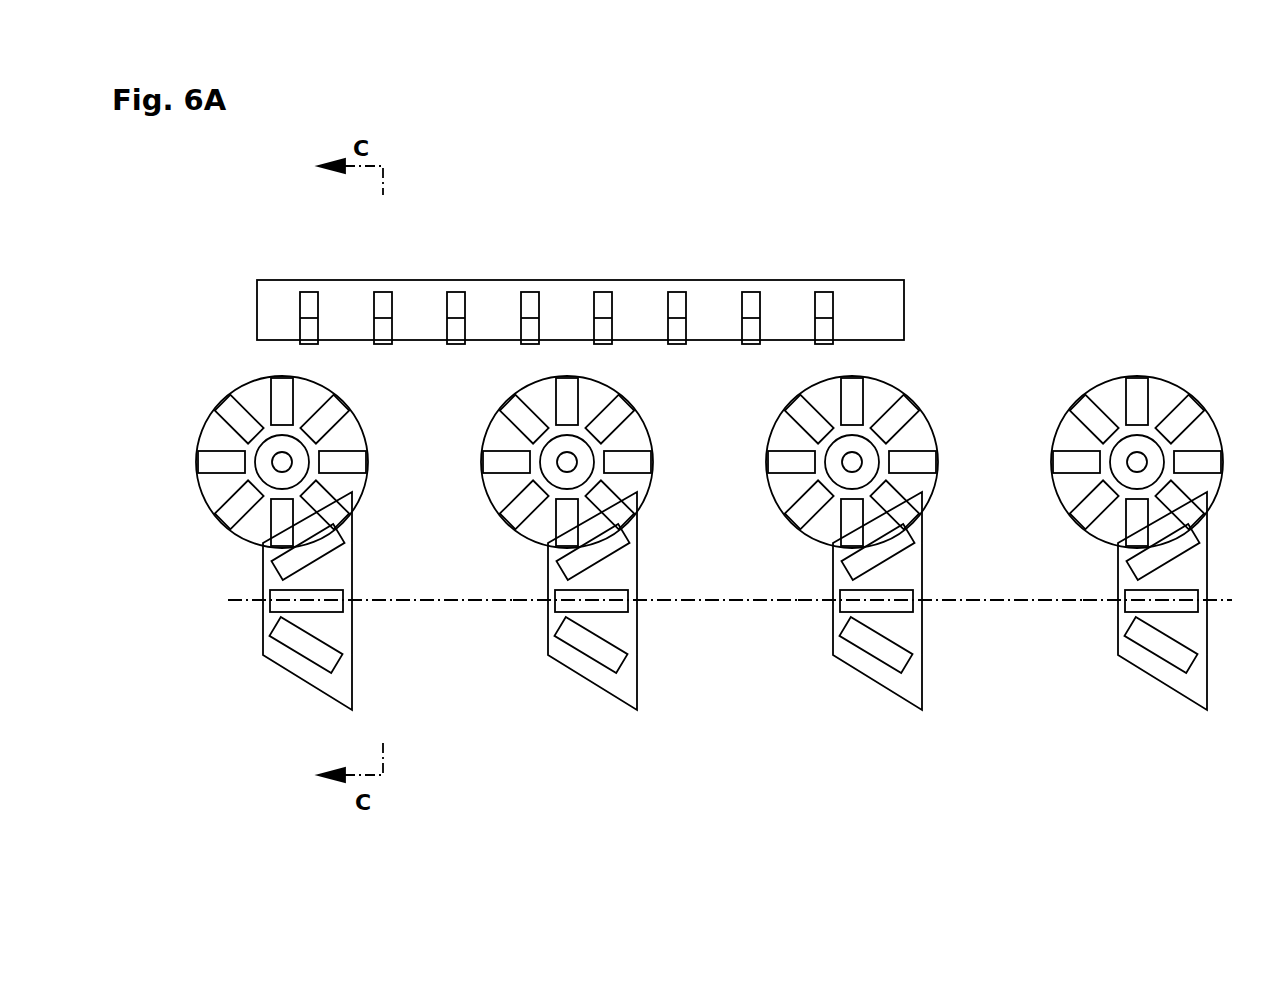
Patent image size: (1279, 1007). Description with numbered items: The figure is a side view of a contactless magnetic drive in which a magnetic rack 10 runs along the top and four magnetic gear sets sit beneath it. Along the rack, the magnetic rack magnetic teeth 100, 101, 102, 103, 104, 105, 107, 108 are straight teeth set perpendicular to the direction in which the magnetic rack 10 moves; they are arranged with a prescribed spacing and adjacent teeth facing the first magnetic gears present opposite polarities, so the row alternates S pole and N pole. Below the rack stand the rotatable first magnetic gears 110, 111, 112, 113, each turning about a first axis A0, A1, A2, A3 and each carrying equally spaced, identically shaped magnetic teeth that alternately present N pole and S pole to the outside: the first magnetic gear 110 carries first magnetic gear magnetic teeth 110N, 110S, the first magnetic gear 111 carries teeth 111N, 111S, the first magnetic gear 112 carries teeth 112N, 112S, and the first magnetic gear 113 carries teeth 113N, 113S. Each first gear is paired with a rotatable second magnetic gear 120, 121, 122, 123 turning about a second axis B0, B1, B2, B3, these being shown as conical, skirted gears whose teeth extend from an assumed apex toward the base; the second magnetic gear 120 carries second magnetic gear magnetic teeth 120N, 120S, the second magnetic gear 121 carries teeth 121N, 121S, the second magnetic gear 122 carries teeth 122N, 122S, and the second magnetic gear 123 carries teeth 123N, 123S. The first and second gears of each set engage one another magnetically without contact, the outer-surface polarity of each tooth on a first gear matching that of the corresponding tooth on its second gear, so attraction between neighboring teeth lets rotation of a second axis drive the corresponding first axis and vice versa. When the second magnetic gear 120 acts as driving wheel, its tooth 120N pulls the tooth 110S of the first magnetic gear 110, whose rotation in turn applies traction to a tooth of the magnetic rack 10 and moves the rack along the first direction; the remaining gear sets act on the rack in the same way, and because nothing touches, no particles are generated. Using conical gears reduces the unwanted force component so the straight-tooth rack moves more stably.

The magnetic rack 10 is at (888, 307).
The magnetic rack magnetic tooth 100 is at (309, 292).
The magnetic rack magnetic tooth 101 is at (383, 292).
The magnetic rack magnetic tooth 102 is at (456, 292).
The magnetic rack magnetic tooth 103 is at (530, 292).
The magnetic rack magnetic tooth 104 is at (603, 292).
The magnetic rack magnetic tooth 105 is at (677, 292).
The magnetic rack magnetic tooth 107 is at (751, 292).
The magnetic rack magnetic tooth 108 is at (824, 292).
The first magnetic gear 110 is at (241, 454).
The first magnetic gear magnetic tooth 110S is at (189, 402).
The first magnetic gear magnetic tooth 110N is at (179, 481).
The first magnetic gear 111 is at (526, 454).
The first magnetic gear magnetic tooth 111S is at (474, 402).
The first magnetic gear magnetic tooth 111N is at (464, 481).
The first magnetic gear 112 is at (811, 454).
The first magnetic gear magnetic tooth 112S is at (759, 402).
The first magnetic gear magnetic tooth 112N is at (749, 481).
The first magnetic gear 113 is at (1096, 454).
The first magnetic gear magnetic tooth 113S is at (1044, 402).
The first magnetic gear magnetic tooth 113N is at (1034, 481).
The second magnetic gear 120 is at (254, 601).
The second magnetic gear magnetic tooth 120N is at (250, 552).
The second magnetic gear magnetic tooth 120S is at (250, 630).
The second magnetic gear 121 is at (539, 601).
The second magnetic gear magnetic tooth 121N is at (535, 552).
The second magnetic gear magnetic tooth 121S is at (535, 630).
The second magnetic gear 122 is at (824, 601).
The second magnetic gear magnetic tooth 122N is at (820, 552).
The second magnetic gear magnetic tooth 122S is at (820, 630).
The second magnetic gear 123 is at (1109, 601).
The second magnetic gear magnetic tooth 123N is at (1105, 552).
The second magnetic gear magnetic tooth 123S is at (1105, 630).
The first axis A0 is at (340, 500).
The first axis A1 is at (624, 500).
The first axis A2 is at (909, 500).
The first axis A3 is at (1194, 500).
The second axis B0 is at (349, 621).
The second axis B1 is at (634, 621).
The second axis B2 is at (919, 621).
The second axis B3 is at (1136, 621).